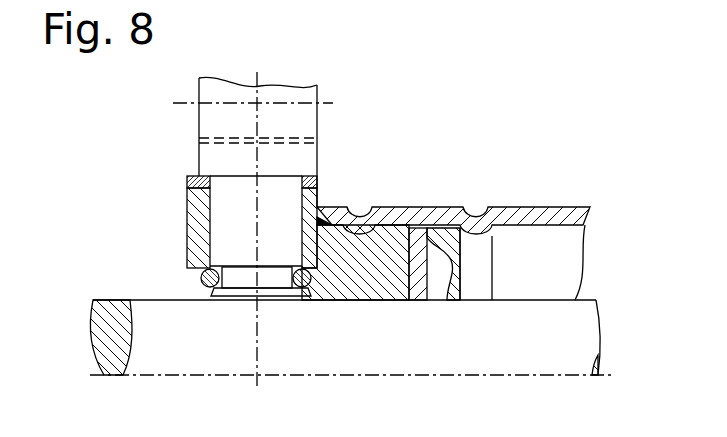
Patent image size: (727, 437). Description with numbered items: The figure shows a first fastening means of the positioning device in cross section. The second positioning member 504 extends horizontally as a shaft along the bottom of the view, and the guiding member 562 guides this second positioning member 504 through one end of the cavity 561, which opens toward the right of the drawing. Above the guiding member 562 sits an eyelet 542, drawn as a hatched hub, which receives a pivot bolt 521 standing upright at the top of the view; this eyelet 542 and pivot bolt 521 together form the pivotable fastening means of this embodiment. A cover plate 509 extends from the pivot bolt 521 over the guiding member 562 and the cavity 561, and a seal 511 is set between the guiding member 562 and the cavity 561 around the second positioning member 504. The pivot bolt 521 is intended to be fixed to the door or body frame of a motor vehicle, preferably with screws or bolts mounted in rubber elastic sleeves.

The second positioning member 504 is at (142, 303).
The cover plate 509 is at (551, 218).
The seal 511 is at (446, 228).
The pivot bolt 521 is at (308, 123).
The eyelet 542 is at (196, 201).
The cavity 561 is at (530, 258).
The guiding member 562 is at (388, 243).